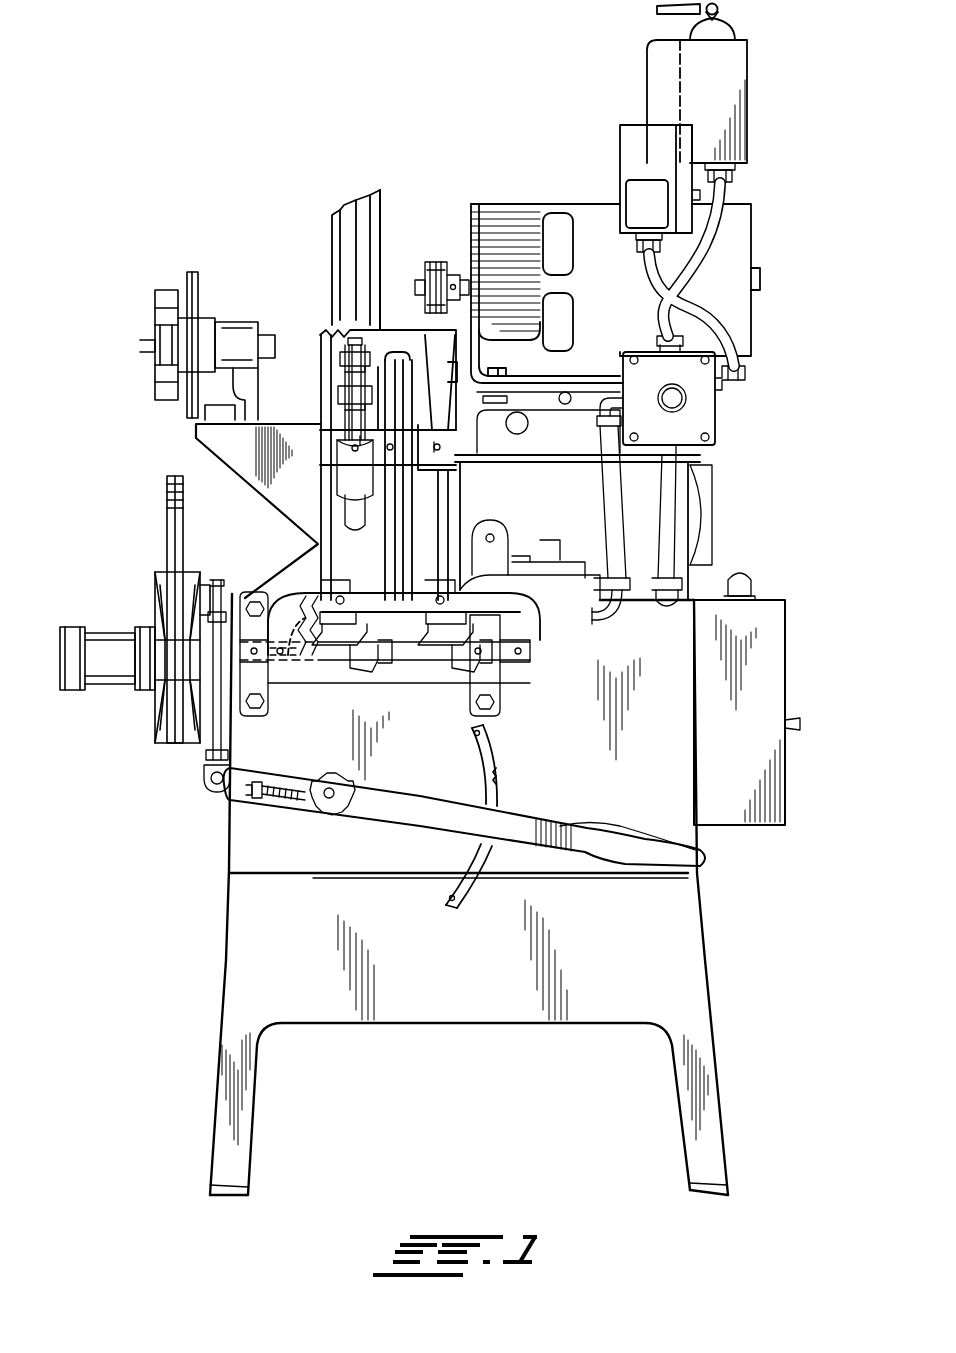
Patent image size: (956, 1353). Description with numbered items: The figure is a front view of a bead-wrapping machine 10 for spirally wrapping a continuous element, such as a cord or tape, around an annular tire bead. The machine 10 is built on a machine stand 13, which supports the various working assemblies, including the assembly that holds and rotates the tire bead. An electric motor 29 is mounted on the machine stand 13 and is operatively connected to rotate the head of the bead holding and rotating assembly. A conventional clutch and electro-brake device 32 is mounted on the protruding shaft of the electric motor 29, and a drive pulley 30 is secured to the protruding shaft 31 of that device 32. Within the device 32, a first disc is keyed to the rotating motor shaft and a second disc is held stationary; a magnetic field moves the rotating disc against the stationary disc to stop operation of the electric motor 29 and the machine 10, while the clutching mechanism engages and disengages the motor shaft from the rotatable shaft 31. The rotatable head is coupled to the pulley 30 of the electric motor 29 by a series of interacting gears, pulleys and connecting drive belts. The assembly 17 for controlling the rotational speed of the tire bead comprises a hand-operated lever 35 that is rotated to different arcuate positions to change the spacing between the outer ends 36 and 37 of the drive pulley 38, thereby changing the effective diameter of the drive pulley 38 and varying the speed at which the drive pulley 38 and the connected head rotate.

The machine 10 is at (752, 133).
The machine stand 13 is at (703, 922).
The assembly for controlling the rotational speed of the tire bead 17 is at (418, 826).
The electric motor 29 is at (598, 216).
The drive pulley 30 is at (425, 272).
The protruding shaft 31 is at (458, 274).
The clutch and electro-brake device 32 is at (505, 216).
The hand-operated lever 35 is at (590, 830).
The outer end of the drive pulley 36 is at (198, 588).
The outer end of the drive pulley 37 is at (155, 580).
The drive pulley 38 is at (155, 725).